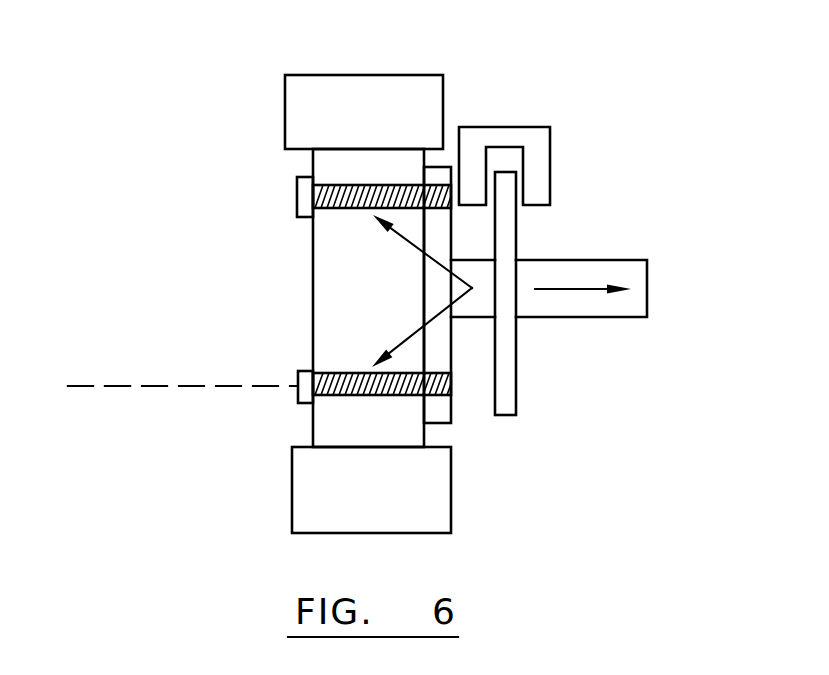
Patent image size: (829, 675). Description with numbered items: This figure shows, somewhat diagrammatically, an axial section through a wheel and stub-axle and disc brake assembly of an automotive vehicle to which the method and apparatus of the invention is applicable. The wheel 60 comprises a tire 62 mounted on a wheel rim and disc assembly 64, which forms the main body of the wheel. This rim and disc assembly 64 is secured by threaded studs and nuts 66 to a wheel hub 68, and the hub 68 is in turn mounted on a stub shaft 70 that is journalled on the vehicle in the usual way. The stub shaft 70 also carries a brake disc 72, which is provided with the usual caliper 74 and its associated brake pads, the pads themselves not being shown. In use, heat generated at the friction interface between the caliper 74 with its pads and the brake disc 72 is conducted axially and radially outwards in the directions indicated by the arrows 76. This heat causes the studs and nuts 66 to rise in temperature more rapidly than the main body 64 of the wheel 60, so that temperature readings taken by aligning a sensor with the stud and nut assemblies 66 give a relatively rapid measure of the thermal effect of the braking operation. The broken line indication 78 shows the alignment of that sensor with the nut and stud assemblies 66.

The wheel 60 is at (190, 417).
The tire 62 is at (442, 80).
The wheel rim and disc assembly 64 is at (313, 238).
The threaded studs and nuts 66 is at (295, 193).
The wheel hub 68 is at (455, 417).
The stub shaft 70 is at (632, 317).
The brake disc 72 is at (518, 388).
The caliper 74 is at (550, 142).
The arrows 76 is at (415, 248).
The broken line indication 78 is at (130, 385).